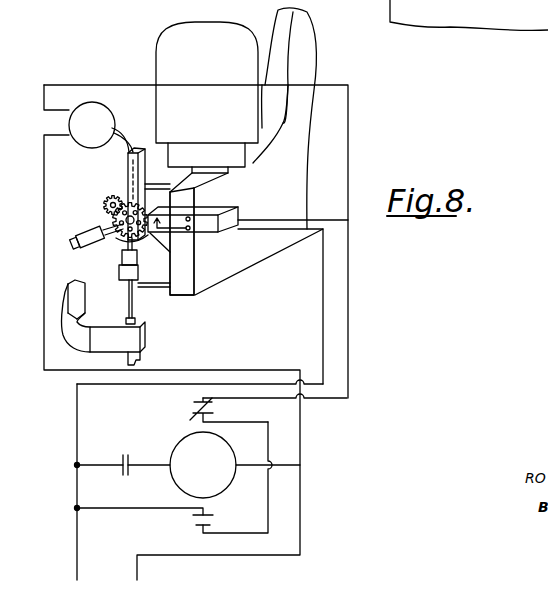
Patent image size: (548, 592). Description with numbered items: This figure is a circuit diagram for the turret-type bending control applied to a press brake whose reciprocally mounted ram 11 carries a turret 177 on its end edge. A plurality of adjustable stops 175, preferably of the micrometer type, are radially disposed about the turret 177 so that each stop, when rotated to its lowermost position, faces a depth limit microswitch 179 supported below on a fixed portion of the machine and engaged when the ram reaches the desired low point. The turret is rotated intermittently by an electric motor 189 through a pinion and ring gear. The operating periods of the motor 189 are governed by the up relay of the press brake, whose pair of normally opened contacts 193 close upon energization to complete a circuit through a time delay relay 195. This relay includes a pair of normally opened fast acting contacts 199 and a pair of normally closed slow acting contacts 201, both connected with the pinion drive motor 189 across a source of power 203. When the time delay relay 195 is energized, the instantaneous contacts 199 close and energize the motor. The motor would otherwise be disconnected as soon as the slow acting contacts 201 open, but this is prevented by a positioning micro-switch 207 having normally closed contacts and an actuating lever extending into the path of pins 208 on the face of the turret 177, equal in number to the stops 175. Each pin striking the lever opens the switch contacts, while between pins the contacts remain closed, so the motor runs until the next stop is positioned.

The ram 11 is at (295, 133).
The adjustable stops 175 is at (92, 247).
The turret 177 is at (110, 209).
The depth limit microswitch 179 is at (134, 338).
The electric motor 189 is at (91, 139).
The normally opened contacts 193 is at (120, 462).
The time delay relay 195 is at (186, 440).
The normally opened fast acting contacts 199 is at (192, 522).
The normally closed slow acting contacts 201 is at (195, 404).
The source of power 203 is at (96, 568).
The positioning micro-switch 207 is at (216, 217).
The pins 208 is at (183, 241).